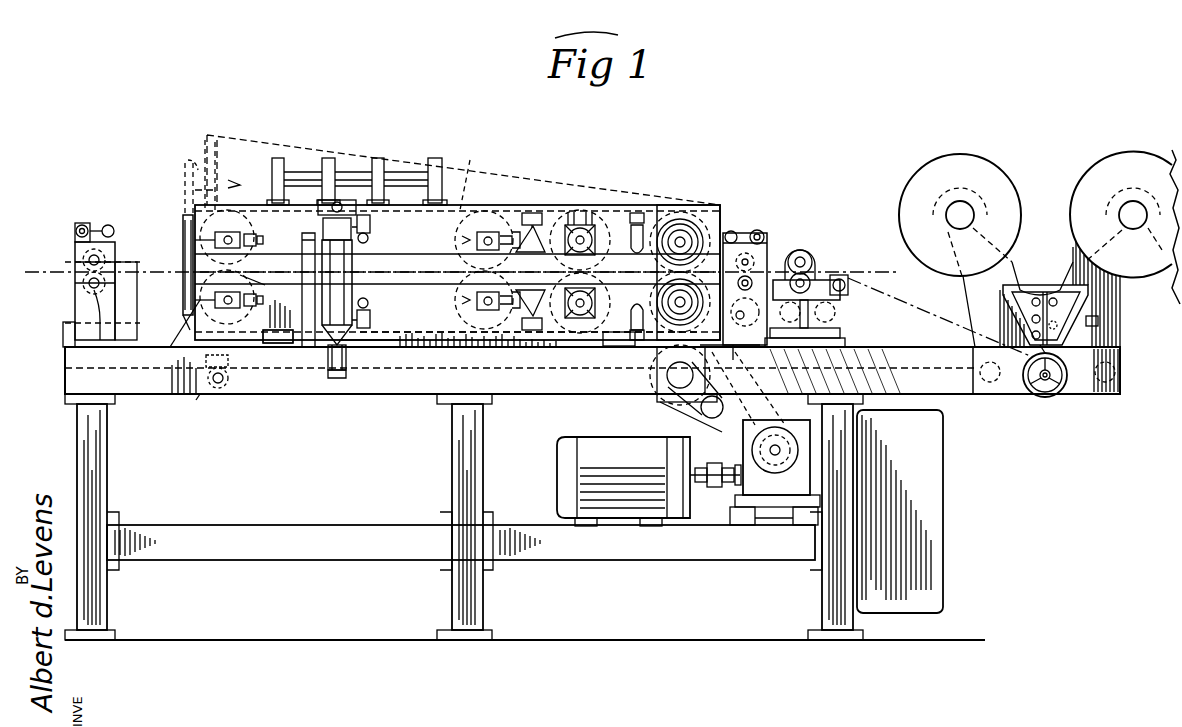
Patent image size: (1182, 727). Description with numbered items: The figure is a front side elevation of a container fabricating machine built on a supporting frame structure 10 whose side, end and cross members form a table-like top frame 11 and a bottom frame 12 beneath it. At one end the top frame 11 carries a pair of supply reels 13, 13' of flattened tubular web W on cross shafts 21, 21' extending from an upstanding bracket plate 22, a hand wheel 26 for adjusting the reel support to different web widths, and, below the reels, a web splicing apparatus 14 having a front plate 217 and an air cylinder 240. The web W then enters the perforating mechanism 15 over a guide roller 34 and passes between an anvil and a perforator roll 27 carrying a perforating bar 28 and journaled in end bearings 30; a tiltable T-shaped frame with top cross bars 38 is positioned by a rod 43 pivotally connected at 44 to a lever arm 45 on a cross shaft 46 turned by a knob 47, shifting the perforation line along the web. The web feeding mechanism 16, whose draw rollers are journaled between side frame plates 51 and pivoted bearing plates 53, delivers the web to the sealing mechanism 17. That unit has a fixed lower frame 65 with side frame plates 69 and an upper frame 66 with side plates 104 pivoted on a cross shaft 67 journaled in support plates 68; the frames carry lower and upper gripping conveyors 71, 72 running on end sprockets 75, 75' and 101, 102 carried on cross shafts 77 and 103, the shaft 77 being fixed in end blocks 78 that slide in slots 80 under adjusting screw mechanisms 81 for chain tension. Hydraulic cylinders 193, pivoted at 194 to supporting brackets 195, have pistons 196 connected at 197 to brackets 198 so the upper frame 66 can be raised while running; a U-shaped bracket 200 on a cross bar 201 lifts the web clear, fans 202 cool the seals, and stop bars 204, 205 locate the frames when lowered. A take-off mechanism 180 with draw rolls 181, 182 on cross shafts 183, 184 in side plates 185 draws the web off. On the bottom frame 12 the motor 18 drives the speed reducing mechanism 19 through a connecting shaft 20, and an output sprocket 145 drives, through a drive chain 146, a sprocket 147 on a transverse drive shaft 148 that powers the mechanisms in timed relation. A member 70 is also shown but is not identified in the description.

The supporting frame structure 10 is at (78, 448).
The top frame 11 is at (936, 347).
The bottom frame 12 is at (688, 560).
The reel 13 is at (1090, 233).
The reel 13' is at (986, 235).
The splice forming mechanism 14 is at (1098, 301).
The web perforating mechanism 15 is at (810, 247).
The web feeding mechanism 16 is at (775, 221).
The sealing mechanism 17 is at (595, 184).
The motor 18 is at (600, 437).
The speed reducing mechanism 19 is at (735, 455).
The connecting shaft 20 is at (714, 488).
The cross shaft 21 is at (1133, 198).
The cross shaft 21' is at (960, 198).
The bracket plate 22 is at (665, 278).
The hand wheel 26 is at (1046, 397).
The perforator roll 27 is at (792, 250).
The perforating bar 28 is at (805, 312).
The end bearing 30 is at (814, 258).
The guide roller 34 is at (842, 280).
The top cross bar 38 is at (836, 314).
The rod 43 is at (648, 373).
The pivotal connection 44 is at (171, 375).
The lever arm 45 is at (228, 362).
The cross shaft 46 is at (220, 390).
The knob 47 is at (200, 394).
The side frame plate 51 is at (730, 233).
The bearing plate 53 is at (733, 231).
The lower frame 65 is at (436, 313).
The upper frame 66 is at (448, 230).
The cross shaft 67 is at (682, 240).
The support plate 68 is at (660, 262).
The side frame plate 69 is at (390, 345).
The support block 70 is at (280, 345).
The lower gripping conveyor 71 is at (426, 345).
The upper chain conveyor 72 is at (472, 177).
The end sprocket 75 is at (260, 278).
The end sprocket 75' is at (234, 290).
The cross shaft 77 is at (173, 311).
The end block 78 is at (227, 268).
The slot 80 is at (202, 330).
The adjusting screw mechanism 81 is at (275, 321).
The end sprocket 101 is at (668, 205).
The end sprocket 102 is at (176, 265).
The cross shaft 103 is at (230, 235).
The side plate 104 is at (524, 210).
The output sprocket 145 is at (780, 428).
The drive chain 146 is at (728, 425).
The sprocket 147 is at (660, 403).
The drive shaft 148 is at (700, 408).
The take-off mechanism 180 is at (121, 233).
The draw roll 181 is at (88, 250).
The draw roll 182 is at (88, 283).
The cross shaft 183 is at (88, 258).
The cross shaft 184 is at (90, 290).
The side plate 185 is at (75, 322).
The hydraulic cylinder 193 is at (355, 258).
The pivotal connection 194 is at (332, 358).
The supporting bracket 195 is at (337, 380).
The piston 196 is at (325, 228).
The pivotal connection 197 is at (322, 190).
The bracket 198 is at (352, 205).
The U-shaped bracket 200 is at (190, 182).
The cross bar 201 is at (188, 190).
The fan 202 is at (436, 158).
The stop bar 204 is at (300, 240).
The stop bar 205 is at (300, 300).
The front plate 217 is at (1121, 352).
The air cylinder 240 is at (1098, 321).
The web W is at (893, 292).